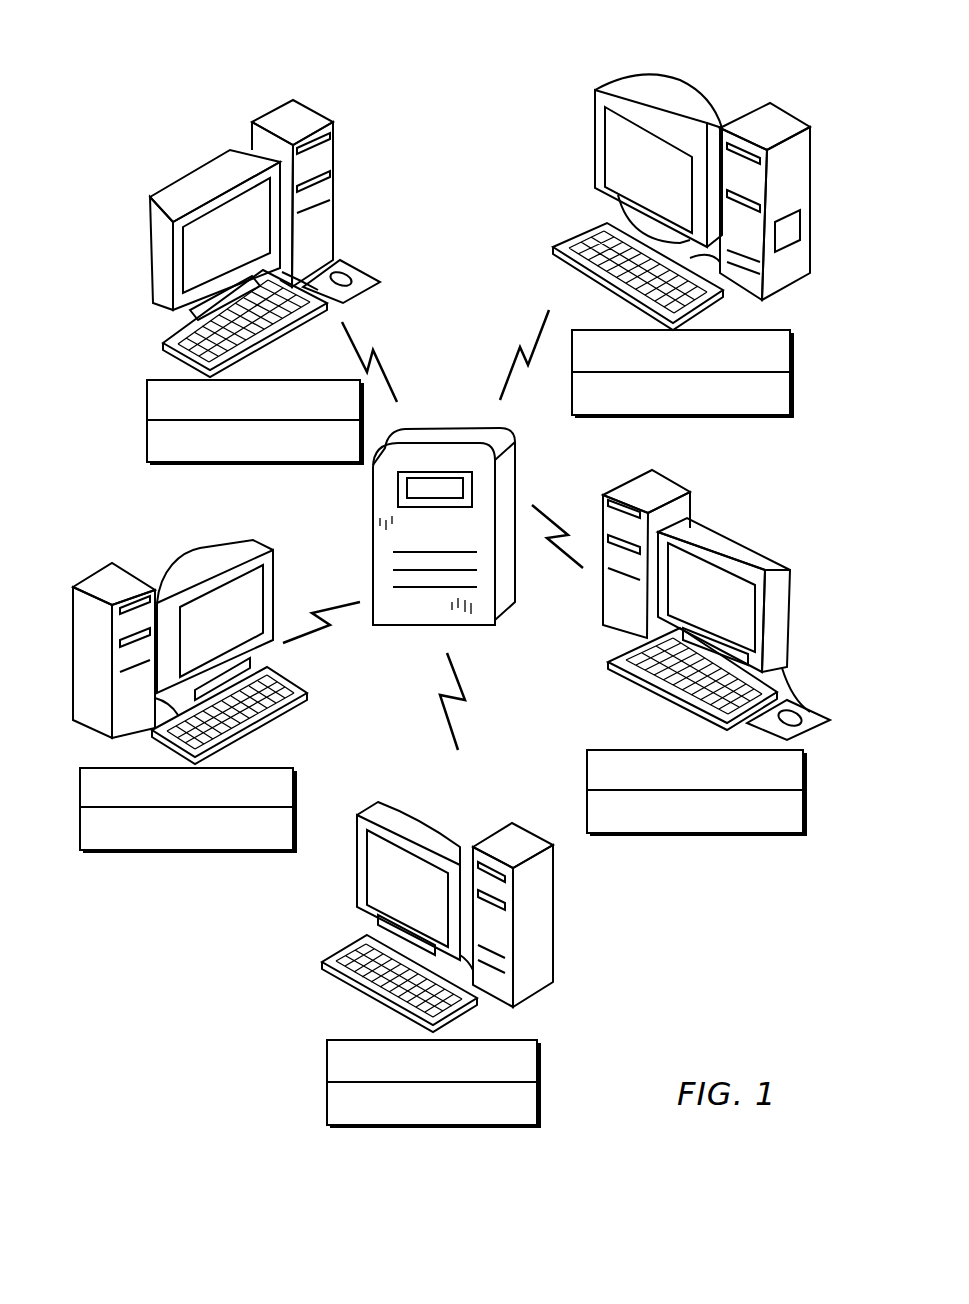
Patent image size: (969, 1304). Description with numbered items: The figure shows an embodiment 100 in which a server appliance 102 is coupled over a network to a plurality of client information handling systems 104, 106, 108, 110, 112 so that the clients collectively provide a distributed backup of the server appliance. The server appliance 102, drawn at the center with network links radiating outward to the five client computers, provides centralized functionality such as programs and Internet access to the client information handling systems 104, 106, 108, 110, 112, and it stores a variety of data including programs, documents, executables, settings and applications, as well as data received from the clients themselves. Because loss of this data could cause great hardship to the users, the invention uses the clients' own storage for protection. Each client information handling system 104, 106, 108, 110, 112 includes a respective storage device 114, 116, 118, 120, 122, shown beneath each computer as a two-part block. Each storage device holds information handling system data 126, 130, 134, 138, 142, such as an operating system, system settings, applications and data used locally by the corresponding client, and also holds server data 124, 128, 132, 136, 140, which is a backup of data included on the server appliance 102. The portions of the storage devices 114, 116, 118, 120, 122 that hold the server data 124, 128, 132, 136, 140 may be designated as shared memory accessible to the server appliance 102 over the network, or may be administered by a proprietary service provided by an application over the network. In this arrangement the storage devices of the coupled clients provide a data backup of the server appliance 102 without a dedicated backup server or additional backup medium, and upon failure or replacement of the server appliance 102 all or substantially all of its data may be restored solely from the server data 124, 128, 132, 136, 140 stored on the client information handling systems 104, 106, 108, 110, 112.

The embodiment 100 is at (176, 1006).
The server appliance 102 is at (410, 428).
The client information handling system 104 is at (197, 170).
The client information handling system 106 is at (685, 85).
The client information handling system 108 is at (770, 562).
The client information handling system 110 is at (430, 805).
The client information handling system 112 is at (122, 563).
The storage device 114 is at (136, 373).
The storage device 116 is at (811, 317).
The storage device 118 is at (838, 734).
The storage device 120 is at (308, 1024).
The storage device 122 is at (55, 759).
The server data 124 is at (147, 400).
The information handling system data 126 is at (147, 440).
The server data 128 is at (790, 345).
The information handling system data 130 is at (790, 385).
The server data 132 is at (804, 765).
The information handling system data 134 is at (804, 805).
The server data 136 is at (327, 1058).
The information handling system data 138 is at (327, 1103).
The server data 140 is at (80, 787).
The information handling system data 142 is at (80, 827).